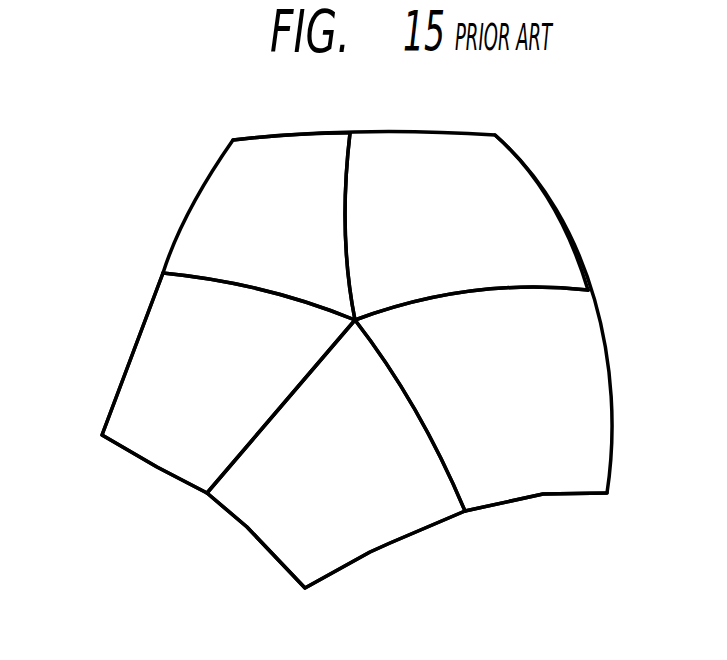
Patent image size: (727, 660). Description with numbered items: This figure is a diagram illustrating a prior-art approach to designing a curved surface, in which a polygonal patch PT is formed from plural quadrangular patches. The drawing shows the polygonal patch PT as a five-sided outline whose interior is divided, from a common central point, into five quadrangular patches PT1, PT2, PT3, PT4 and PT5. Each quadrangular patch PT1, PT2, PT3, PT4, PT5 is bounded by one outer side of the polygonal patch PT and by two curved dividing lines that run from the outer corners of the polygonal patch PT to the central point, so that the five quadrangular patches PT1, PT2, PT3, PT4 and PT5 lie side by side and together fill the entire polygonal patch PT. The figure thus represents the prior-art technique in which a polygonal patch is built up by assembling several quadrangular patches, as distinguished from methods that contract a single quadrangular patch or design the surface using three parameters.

The polygonal patch PT is at (341, 343).
The quadrangular patch PT1 is at (410, 523).
The quadrangular patch PT2 is at (543, 485).
The quadrangular patch PT3 is at (540, 212).
The quadrangular patch PT4 is at (295, 148).
The quadrangular patch PT5 is at (155, 342).